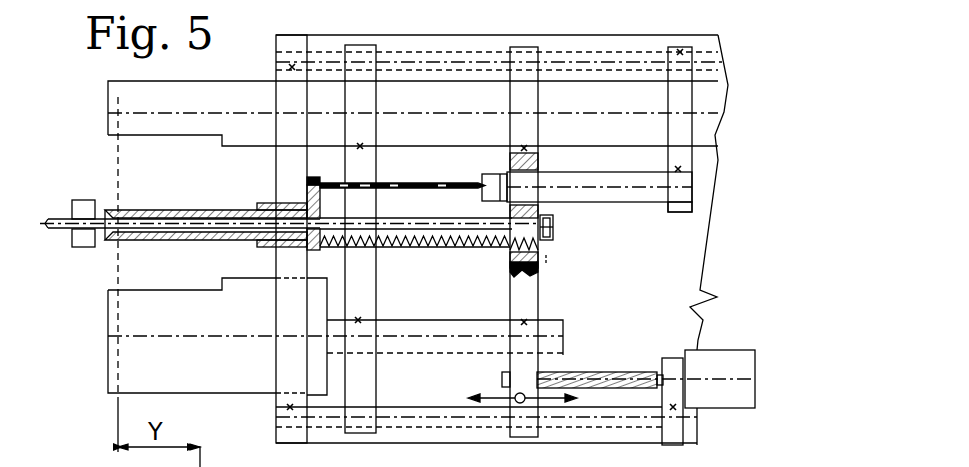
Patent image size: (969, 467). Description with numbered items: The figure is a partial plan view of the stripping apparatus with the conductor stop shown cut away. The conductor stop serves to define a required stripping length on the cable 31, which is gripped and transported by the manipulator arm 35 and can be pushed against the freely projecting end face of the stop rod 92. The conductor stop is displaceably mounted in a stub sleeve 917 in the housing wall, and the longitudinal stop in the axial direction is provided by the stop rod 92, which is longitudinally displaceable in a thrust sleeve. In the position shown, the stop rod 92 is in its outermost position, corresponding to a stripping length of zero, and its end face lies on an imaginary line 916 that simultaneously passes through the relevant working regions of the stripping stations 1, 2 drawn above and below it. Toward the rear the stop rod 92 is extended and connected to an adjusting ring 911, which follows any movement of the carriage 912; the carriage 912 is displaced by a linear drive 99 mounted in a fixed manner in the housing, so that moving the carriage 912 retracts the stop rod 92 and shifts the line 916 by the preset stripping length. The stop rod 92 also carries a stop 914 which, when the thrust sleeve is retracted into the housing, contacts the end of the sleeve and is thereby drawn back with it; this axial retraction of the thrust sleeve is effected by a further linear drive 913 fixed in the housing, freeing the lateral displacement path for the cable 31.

The stripping station 1 is at (157, 375).
The stripping station 2 is at (150, 93).
The cable 31 is at (52, 232).
The manipulator arm 35 is at (80, 210).
The stop rod 92 is at (140, 240).
The linear drive 99 is at (741, 367).
The adjusting ring 911 is at (555, 235).
The carriage 912 is at (527, 285).
The linear drive 913 is at (613, 193).
The stop 914 is at (325, 226).
The imaginary line 916 is at (118, 172).
The stub sleeve 917 is at (257, 203).